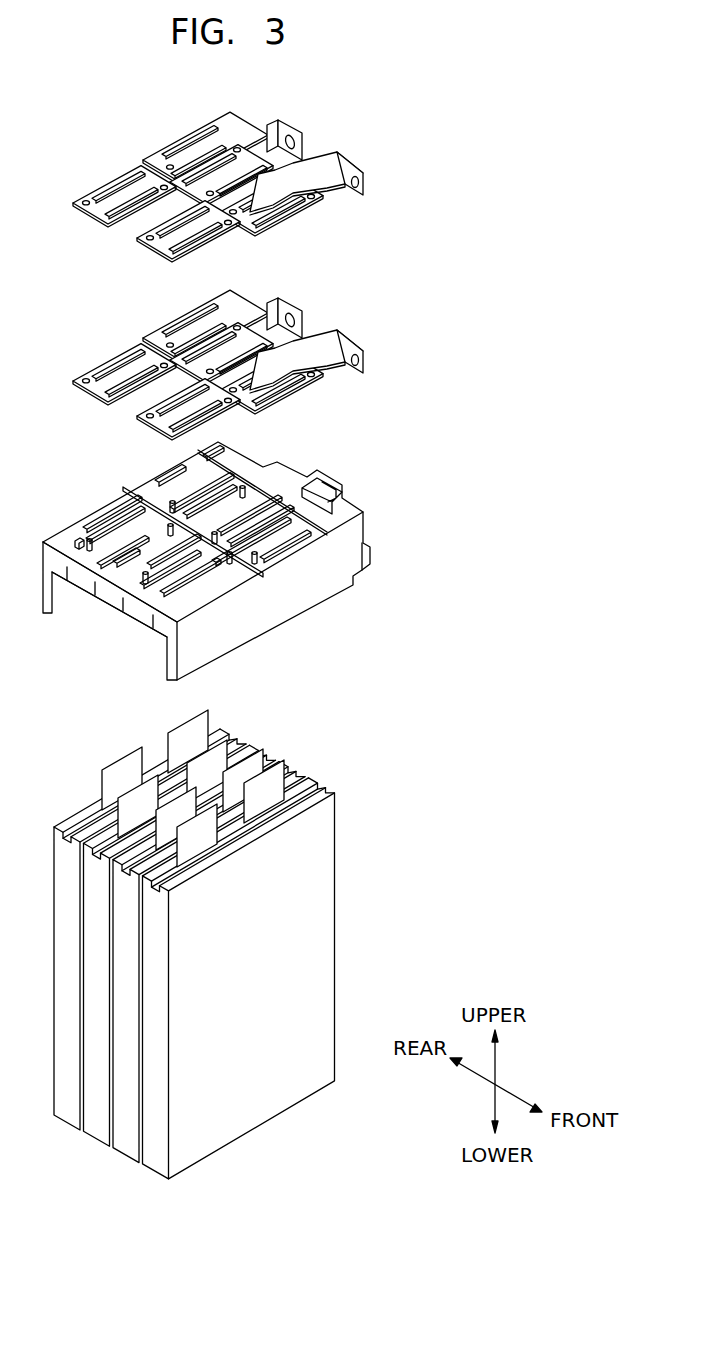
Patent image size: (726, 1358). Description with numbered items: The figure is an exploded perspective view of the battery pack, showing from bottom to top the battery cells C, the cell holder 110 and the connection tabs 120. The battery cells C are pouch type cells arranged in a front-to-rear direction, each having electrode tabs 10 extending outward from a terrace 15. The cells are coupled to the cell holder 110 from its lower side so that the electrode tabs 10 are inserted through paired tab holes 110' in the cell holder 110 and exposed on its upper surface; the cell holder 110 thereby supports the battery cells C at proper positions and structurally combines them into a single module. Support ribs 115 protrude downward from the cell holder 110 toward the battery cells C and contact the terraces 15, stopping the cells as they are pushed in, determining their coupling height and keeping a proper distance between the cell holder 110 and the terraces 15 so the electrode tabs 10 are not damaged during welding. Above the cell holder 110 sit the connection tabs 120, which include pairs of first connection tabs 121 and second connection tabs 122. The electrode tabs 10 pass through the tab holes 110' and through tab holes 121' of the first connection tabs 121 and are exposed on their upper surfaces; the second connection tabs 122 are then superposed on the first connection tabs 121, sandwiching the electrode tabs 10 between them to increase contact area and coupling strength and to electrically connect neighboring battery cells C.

The electrode tabs 10 is at (57, 725).
The terrace 15 is at (322, 795).
The battery cell C is at (330, 932).
The cell holder 110 is at (257, 561).
The tab hole 110' is at (98, 495).
The support rib 115 is at (110, 600).
The connection tab 120 is at (482, 185).
The first connection tab 121 is at (261, 365).
The tab hole 121' is at (112, 358).
The second connection tab 122 is at (385, 192).